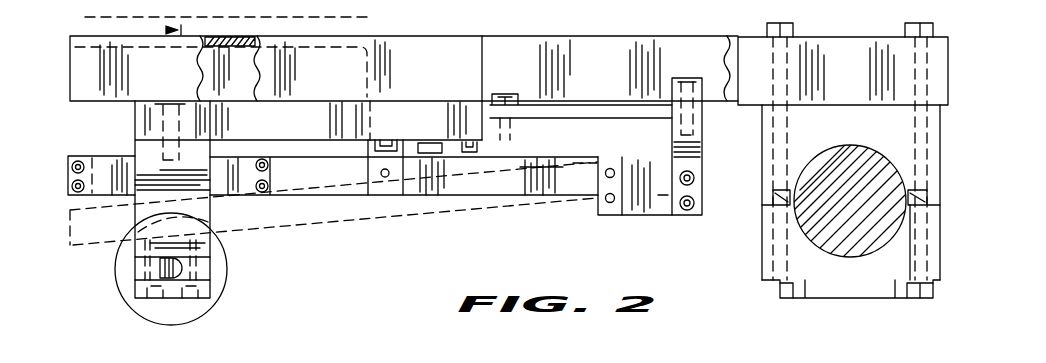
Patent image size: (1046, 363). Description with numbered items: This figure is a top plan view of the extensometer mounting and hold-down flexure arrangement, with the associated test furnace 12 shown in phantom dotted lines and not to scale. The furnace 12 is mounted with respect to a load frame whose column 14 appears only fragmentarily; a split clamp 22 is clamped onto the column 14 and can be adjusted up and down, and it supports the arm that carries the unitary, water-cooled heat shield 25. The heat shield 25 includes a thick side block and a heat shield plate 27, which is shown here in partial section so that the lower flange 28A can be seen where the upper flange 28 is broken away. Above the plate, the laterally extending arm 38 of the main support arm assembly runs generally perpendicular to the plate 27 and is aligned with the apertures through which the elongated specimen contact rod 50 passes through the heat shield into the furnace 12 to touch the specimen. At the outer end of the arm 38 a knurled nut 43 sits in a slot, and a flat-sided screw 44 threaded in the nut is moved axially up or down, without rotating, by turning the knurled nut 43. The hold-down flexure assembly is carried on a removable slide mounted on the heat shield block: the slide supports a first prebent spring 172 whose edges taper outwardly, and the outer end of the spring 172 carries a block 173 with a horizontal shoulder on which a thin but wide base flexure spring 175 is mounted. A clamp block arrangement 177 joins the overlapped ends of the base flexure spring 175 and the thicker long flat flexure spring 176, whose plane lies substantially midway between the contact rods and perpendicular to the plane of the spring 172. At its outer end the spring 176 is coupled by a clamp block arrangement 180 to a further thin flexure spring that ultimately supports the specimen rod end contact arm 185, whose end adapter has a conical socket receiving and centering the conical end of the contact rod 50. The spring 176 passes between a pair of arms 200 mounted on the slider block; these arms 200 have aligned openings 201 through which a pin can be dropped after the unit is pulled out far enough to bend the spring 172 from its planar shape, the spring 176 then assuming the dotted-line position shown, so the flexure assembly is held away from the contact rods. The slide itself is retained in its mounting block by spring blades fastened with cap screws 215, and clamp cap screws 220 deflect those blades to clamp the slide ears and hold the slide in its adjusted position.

The furnace 12 is at (335, 21).
The column 14 is at (863, 243).
The split clamp 22 is at (828, 285).
The heat shield 25 is at (455, 48).
The heat shield plate 27 is at (235, 36).
The upper flange 28 is at (90, 68).
The lower flange 28A is at (235, 66).
The laterally extending arm 38 is at (147, 210).
The knurled nut 43 is at (227, 268).
The screw 44 is at (157, 273).
The specimen contact rod 50 is at (166, 30).
The first prebent spring 172 is at (551, 118).
The block 173 is at (703, 137).
The base flexure spring 175 is at (655, 200).
The long flat flexure spring 176 is at (505, 183).
The clamp block arrangement 177 is at (602, 210).
The clamp block arrangement 180 is at (270, 157).
The specimen rod end contact arm 185 is at (113, 157).
The arms 200 is at (408, 157).
The aligned openings 201 is at (385, 180).
The cap screws 215 is at (373, 146).
The clamp cap screws 220 is at (440, 146).